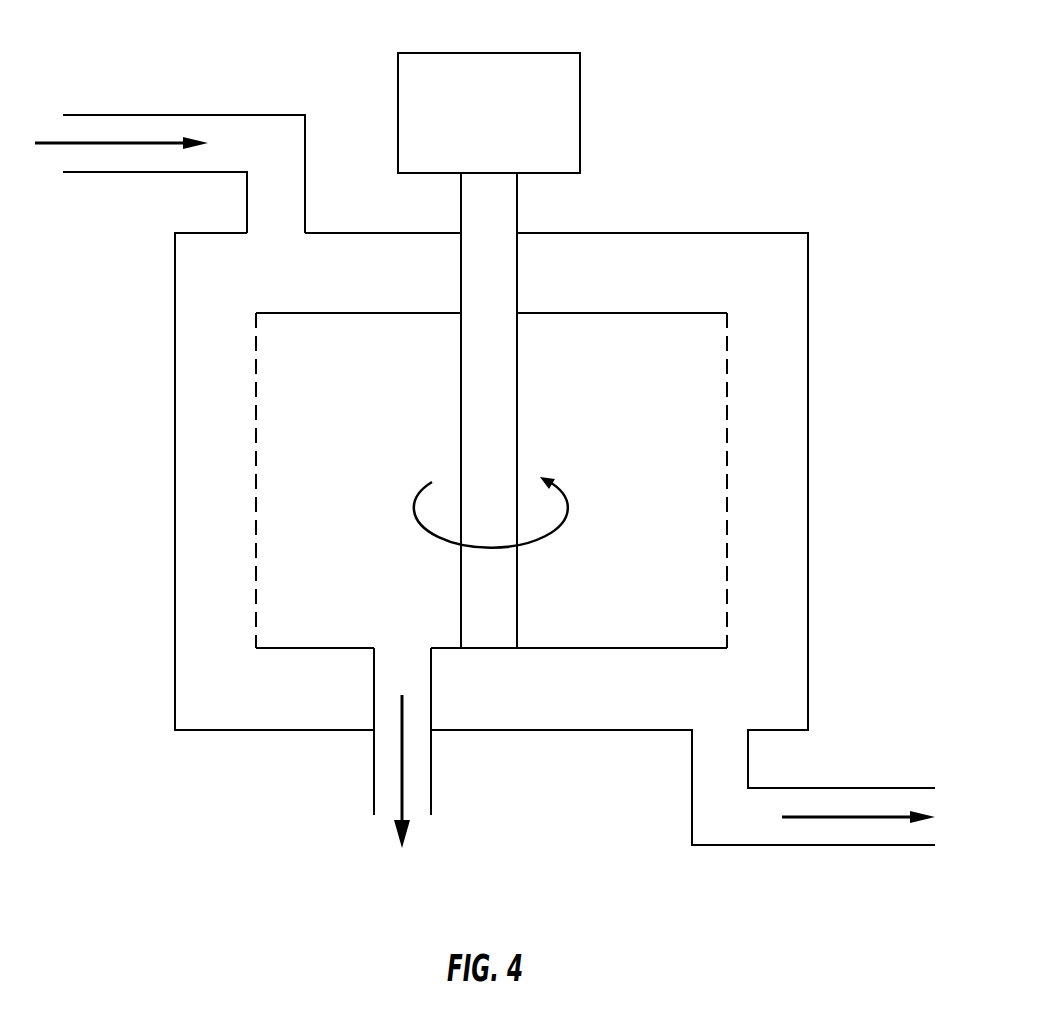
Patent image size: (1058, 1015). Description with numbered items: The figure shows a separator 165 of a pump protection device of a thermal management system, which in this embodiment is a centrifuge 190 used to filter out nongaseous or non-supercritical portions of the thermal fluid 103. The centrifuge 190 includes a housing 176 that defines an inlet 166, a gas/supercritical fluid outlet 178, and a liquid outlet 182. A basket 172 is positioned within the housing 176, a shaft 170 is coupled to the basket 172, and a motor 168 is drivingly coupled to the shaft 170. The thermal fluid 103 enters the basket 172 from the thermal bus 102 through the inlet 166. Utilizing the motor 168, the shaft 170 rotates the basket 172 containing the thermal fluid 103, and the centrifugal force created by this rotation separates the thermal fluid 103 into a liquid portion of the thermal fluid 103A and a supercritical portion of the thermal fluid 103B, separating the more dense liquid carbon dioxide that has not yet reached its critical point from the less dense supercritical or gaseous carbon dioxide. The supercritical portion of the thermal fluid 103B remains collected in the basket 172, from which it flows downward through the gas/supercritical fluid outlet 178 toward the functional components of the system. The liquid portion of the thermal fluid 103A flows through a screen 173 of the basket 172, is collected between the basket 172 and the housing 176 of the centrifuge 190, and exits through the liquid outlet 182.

The separator 165 is at (730, 58).
The centrifuge 190 is at (742, 128).
The inlet 166 is at (148, 120).
The thermal bus 102 is at (105, 115).
The thermal fluid 103 is at (55, 145).
The motor 168 is at (582, 78).
The shaft 170 is at (520, 221).
The basket 172 is at (648, 313).
The screen 173 is at (256, 513).
The housing 176 is at (810, 640).
The gas/supercritical fluid outlet 178 is at (381, 773).
The supercritical portion of the thermal fluid 103B is at (403, 784).
The liquid outlet 182 is at (768, 830).
The liquid portion of the thermal fluid 103A is at (852, 815).